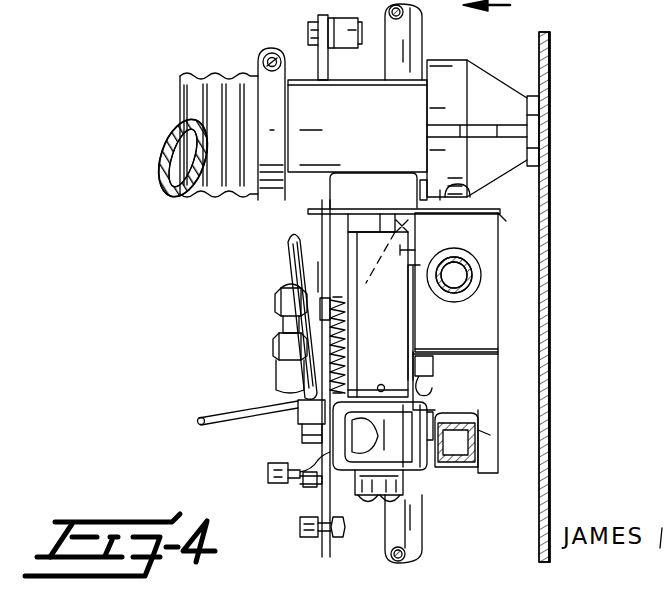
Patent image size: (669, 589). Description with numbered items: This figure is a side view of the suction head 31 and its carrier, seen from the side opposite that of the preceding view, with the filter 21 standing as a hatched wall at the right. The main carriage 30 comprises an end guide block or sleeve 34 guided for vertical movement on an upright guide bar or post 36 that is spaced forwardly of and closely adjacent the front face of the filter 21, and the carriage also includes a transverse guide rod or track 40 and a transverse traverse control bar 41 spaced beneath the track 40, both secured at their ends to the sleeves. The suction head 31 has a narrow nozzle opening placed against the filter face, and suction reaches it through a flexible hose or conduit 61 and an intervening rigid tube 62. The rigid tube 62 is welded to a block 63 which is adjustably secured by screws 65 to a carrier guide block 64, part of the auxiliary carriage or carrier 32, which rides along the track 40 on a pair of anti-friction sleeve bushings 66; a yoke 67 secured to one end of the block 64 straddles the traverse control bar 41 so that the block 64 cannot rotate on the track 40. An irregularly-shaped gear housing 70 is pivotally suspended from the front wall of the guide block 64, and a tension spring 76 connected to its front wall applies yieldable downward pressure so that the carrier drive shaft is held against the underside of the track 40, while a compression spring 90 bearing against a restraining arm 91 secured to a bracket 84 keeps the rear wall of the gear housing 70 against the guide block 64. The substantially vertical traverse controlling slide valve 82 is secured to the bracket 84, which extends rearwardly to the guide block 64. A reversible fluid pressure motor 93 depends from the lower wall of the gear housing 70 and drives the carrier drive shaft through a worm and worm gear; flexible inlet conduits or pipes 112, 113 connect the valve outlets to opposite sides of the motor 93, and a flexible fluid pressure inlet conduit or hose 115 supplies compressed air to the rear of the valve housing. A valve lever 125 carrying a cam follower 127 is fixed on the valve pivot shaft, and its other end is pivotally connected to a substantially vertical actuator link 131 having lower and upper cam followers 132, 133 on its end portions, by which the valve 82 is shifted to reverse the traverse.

The filter 21 is at (551, 74).
The main carriage 30 is at (478, 430).
The suction head 31 is at (512, 68).
The auxiliary carriage or carrier 32 is at (505, 218).
The end guide block or sleeve 34 is at (434, 482).
The upright guide bar or post 36 is at (424, 30).
The transverse guide rod or track 40 is at (472, 273).
The transverse traverse control bar 41 is at (478, 455).
The flexible hose or conduit 61 is at (188, 94).
The rigid tube 62 is at (373, 113).
The block 63 is at (390, 199).
The carrier guide block 64 is at (486, 237).
The screws 65 is at (457, 182).
The anti-friction sleeve bushings 66 is at (475, 290).
The yoke 67 is at (483, 363).
The gear housing 70 is at (400, 252).
The tension spring 76 is at (350, 366).
The traverse controlling slide valve 82 is at (333, 272).
The bracket 84 is at (380, 222).
The compression spring 90 is at (345, 322).
The restraining arm 91 is at (289, 278).
The reversible fluid pressure motor 93 is at (431, 410).
The inlet conduit or pipe 112 is at (292, 248).
The inlet conduit or pipe 113 is at (288, 338).
The flexible fluid pressure inlet conduit or hose 115 is at (247, 412).
The valve lever 125 is at (298, 487).
The cam follower 127 is at (280, 483).
The actuator link 131 is at (318, 51).
The cam follower 132 is at (316, 537).
The cam follower 133 is at (341, 47).